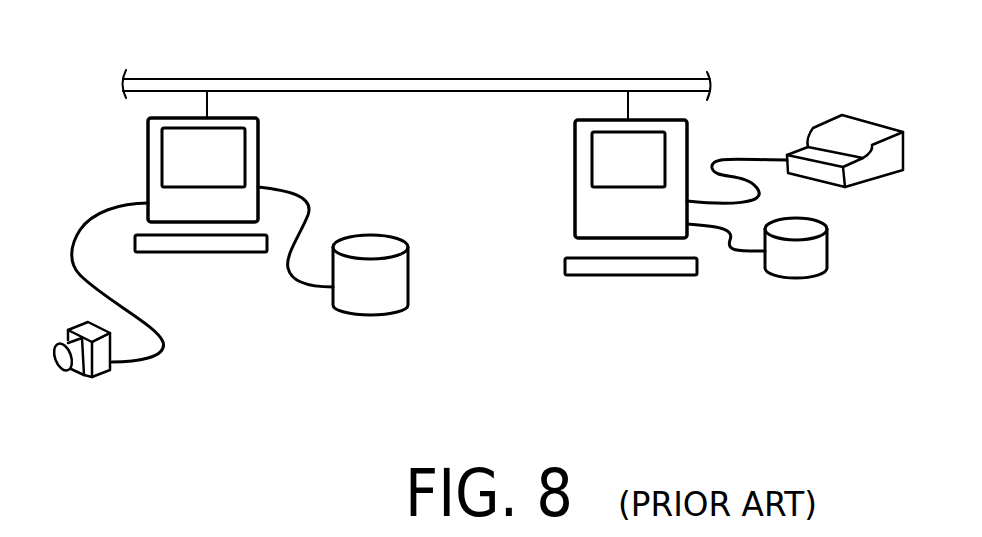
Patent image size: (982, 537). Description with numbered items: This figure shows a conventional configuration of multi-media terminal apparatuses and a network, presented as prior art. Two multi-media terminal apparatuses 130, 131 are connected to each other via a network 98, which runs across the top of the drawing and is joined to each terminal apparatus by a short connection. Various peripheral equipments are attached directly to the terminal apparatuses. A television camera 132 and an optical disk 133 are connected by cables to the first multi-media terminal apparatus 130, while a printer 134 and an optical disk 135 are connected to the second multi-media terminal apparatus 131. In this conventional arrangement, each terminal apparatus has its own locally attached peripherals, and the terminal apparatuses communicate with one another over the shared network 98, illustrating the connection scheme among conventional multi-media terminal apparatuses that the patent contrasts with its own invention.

The network 98 is at (600, 79).
The multi-media terminal apparatus 130 is at (260, 153).
The multi-media terminal apparatus 131 is at (583, 192).
The television camera 132 is at (103, 368).
The optical disk 133 is at (373, 302).
The printer 134 is at (828, 133).
The optical disk 135 is at (800, 270).